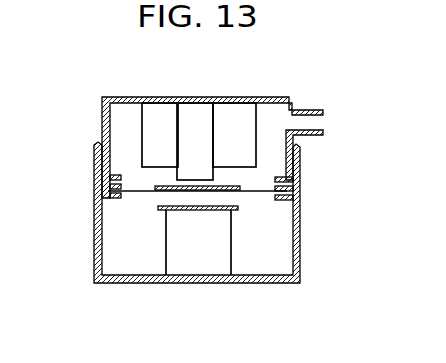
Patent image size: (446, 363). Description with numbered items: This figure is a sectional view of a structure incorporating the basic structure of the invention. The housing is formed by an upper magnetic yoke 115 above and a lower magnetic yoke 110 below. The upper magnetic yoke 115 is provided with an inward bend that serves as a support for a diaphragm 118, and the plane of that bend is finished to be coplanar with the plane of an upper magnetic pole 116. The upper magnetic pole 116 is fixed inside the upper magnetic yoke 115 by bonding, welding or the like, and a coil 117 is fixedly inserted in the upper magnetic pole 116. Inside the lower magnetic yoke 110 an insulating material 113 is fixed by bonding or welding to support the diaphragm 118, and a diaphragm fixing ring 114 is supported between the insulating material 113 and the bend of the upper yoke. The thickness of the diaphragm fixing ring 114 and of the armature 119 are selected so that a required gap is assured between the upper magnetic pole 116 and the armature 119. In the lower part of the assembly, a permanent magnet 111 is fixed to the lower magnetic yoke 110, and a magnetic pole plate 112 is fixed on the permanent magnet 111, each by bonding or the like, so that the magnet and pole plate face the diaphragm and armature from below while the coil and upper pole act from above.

The lower magnetic yoke 110 is at (142, 283).
The permanent magnet 111 is at (199, 265).
The magnetic pole plate 112 is at (232, 212).
The insulating material 113 is at (300, 200).
The diaphragm fixing ring 114 is at (299, 190).
The upper magnetic yoke 115 is at (189, 146).
The upper magnetic pole 116 is at (195, 117).
The coil 117 is at (234, 112).
The diaphragm 118 is at (133, 193).
The armature 119 is at (159, 188).